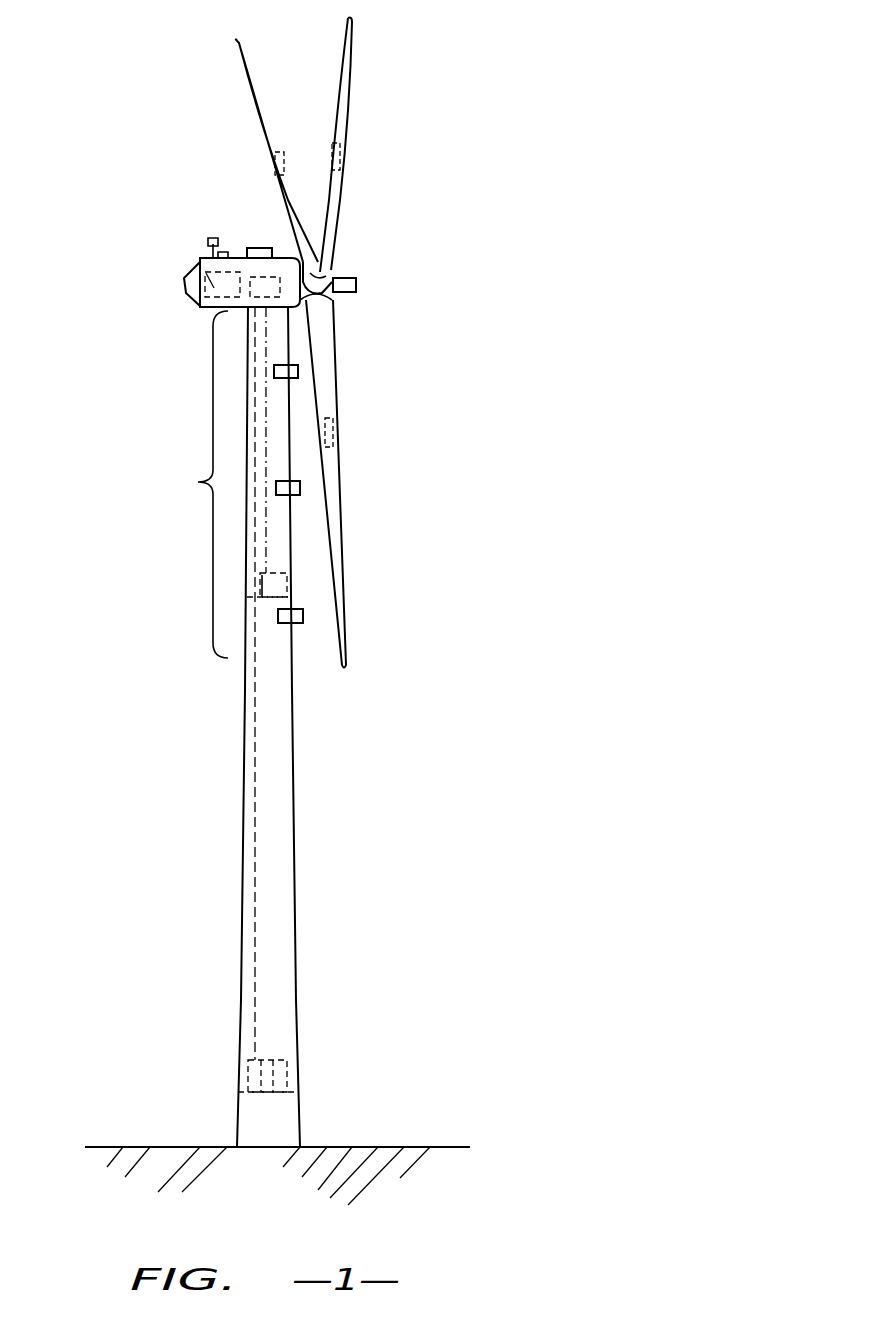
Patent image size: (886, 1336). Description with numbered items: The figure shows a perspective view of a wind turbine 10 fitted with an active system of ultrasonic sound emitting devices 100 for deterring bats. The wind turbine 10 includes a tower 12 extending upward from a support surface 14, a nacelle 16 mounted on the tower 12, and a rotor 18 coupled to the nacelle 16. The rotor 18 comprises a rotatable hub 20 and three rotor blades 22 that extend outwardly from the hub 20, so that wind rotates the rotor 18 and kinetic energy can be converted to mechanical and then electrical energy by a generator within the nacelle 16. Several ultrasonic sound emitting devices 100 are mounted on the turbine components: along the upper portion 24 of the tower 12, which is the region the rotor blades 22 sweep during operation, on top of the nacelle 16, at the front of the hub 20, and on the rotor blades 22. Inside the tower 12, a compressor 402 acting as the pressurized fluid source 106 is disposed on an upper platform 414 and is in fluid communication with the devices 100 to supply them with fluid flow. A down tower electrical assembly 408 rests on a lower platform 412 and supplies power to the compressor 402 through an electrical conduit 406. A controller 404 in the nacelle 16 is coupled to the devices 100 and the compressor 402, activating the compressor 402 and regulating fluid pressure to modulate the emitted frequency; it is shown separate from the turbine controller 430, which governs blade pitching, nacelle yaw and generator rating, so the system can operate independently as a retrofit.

The wind turbine 10 is at (462, 118).
The tower 12 is at (250, 843).
The support surface 14 is at (365, 1147).
The nacelle 16 is at (207, 308).
The rotor 18 is at (366, 284).
The rotatable hub 20 is at (353, 268).
The rotor blade 22 is at (261, 120).
The upper portion of the tower 24 is at (193, 484).
The ultrasonic sound emitting device 100 is at (262, 248).
The pressurized fluid source 106 is at (283, 563).
The compressor 402 is at (285, 578).
The controller 404 is at (257, 283).
The electrical conduit 406 is at (243, 975).
The down tower electrical assembly 408 is at (272, 1050).
The lower platform 412 is at (280, 1095).
The upper platform 414 is at (277, 598).
The turbine controller 430 is at (205, 262).